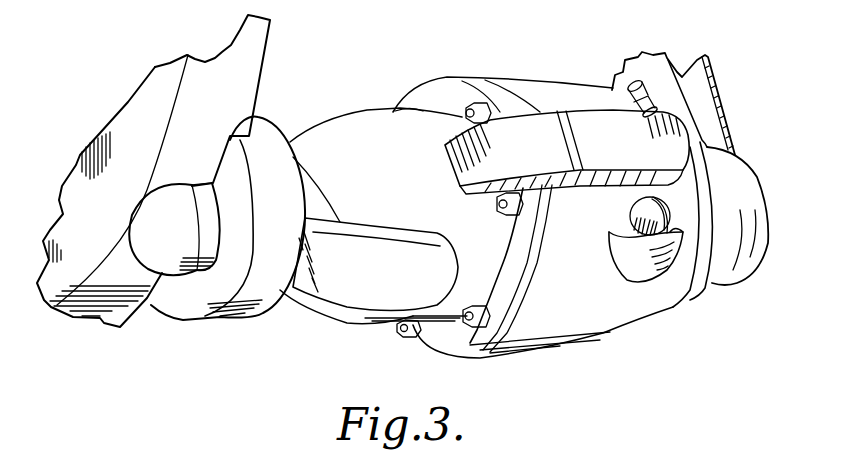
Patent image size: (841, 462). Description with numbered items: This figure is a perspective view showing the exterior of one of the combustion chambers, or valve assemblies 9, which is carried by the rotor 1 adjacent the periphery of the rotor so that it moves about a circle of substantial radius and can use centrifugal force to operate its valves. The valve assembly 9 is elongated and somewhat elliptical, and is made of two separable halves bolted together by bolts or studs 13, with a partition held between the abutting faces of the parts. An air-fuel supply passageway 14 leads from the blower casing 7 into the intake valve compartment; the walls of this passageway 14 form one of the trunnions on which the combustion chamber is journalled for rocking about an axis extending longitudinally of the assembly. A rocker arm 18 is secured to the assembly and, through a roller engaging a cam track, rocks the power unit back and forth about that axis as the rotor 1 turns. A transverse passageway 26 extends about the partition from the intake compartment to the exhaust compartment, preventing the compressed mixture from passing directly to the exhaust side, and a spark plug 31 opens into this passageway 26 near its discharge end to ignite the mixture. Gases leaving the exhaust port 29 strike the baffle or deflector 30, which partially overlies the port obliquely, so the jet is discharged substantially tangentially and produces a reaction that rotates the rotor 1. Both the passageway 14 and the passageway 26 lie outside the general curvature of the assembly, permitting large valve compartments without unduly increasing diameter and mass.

The rotor 1 is at (667, 60).
The blower casing 7 is at (252, 82).
The combustion chamber or valve assembly 9 is at (376, 79).
The bolts or studs 13 is at (467, 111).
The air-fuel supply passageway 14 is at (385, 233).
The rocker arm 18 is at (746, 176).
The transverse passageway 26 is at (543, 123).
The exhaust port 29 is at (630, 208).
The baffle or deflector 30 is at (613, 235).
The spark plug 31 is at (652, 104).